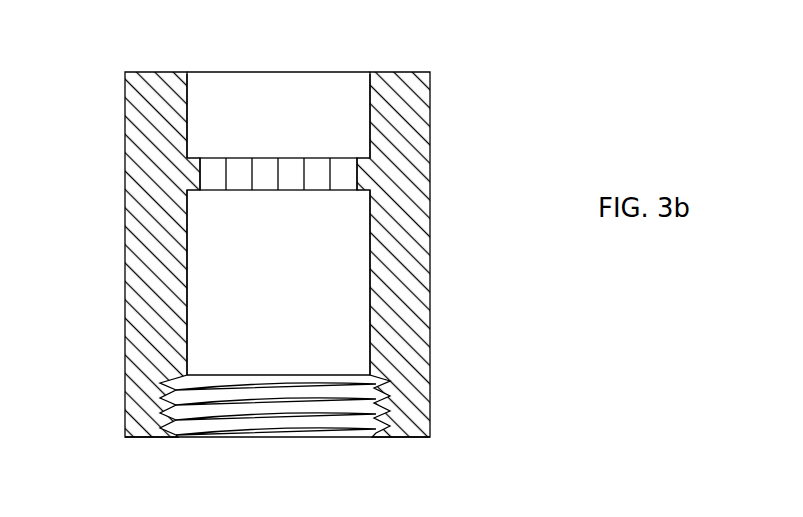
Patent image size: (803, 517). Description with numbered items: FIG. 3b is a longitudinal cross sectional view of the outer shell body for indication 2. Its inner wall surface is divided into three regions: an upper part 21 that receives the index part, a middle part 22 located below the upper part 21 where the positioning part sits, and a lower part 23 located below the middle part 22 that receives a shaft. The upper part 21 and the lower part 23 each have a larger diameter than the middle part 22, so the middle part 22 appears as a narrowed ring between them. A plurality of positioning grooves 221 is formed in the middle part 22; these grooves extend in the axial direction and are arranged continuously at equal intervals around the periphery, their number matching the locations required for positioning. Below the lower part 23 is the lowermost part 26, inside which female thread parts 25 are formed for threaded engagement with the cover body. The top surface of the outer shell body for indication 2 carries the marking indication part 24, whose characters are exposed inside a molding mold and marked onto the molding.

The outer shell body for indication 2 is at (422, 53).
The upper part 21 is at (372, 117).
The middle part 22 is at (360, 180).
The positioning grooves 221 is at (215, 180).
The lower part 23 is at (372, 318).
The marking indication part 24 is at (165, 72).
The female thread parts 25 is at (380, 408).
The lowermost part 26 is at (383, 386).